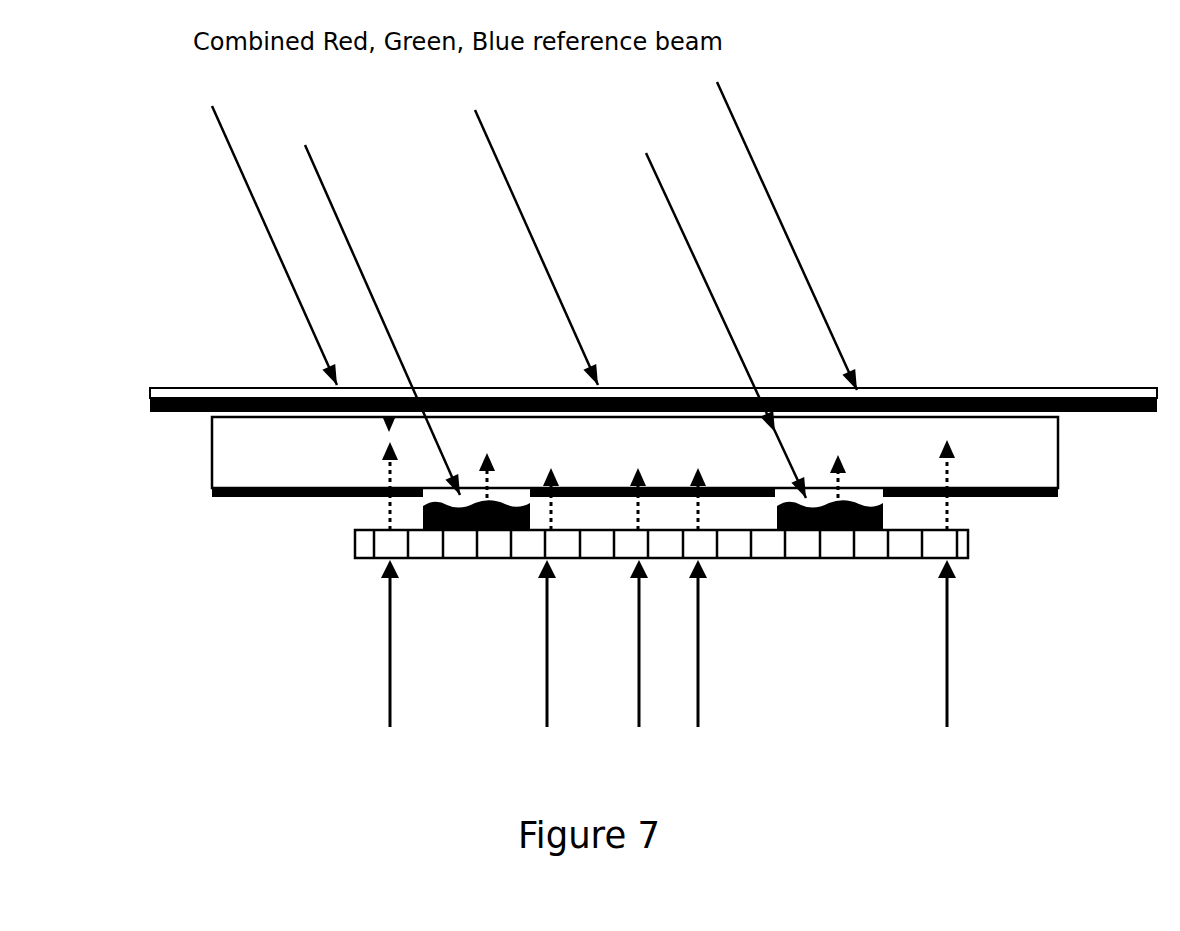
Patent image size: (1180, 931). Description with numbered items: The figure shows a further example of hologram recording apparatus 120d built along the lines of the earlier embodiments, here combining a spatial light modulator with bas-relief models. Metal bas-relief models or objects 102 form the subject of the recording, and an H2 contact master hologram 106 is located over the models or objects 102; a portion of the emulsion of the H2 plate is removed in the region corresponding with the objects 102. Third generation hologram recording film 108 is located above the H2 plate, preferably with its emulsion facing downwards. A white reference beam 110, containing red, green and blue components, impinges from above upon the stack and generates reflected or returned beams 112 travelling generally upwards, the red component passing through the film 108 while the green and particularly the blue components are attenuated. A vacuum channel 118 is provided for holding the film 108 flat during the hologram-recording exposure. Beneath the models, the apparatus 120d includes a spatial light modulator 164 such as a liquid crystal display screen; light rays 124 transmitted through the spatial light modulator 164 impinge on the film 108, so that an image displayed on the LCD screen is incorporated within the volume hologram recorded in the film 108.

The reference beam 110 is at (443, 111).
The third generation hologram (H3) recording film 108 is at (641, 376).
The H2 contact master hologram 106 is at (586, 457).
The spatial light modulator 164 is at (630, 561).
The light rays 124 is at (818, 705).
The reflected or returned beams 112 is at (508, 488).
The vacuum channel 118 is at (759, 454).
The bas-relief models or objects 102 is at (455, 530).
The apparatus 120d is at (166, 683).